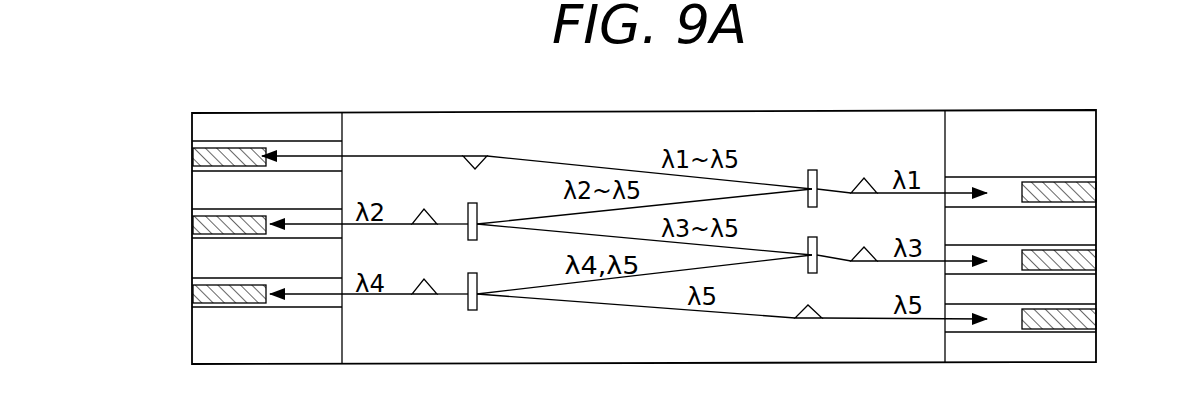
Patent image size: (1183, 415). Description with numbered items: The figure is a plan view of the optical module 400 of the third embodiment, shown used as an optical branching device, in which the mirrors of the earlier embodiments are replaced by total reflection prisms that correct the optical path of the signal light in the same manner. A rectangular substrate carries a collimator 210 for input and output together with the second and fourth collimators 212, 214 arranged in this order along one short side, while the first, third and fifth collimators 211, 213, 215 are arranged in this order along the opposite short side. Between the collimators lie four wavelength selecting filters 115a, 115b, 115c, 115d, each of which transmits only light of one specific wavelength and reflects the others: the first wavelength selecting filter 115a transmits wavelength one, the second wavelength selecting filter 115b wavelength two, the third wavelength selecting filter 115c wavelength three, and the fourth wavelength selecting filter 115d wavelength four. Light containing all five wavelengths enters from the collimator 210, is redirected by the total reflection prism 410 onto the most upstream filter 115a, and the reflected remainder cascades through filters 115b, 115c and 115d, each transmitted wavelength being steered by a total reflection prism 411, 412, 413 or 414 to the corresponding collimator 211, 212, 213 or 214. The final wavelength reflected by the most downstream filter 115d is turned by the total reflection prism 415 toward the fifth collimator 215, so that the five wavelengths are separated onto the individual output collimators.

The optical module 400 is at (876, 98).
The collimator for input and output 210 is at (212, 145).
The second collimator 212 is at (212, 214).
The fourth collimator 214 is at (212, 283).
The first collimator 211 is at (1078, 181).
The third collimator 213 is at (1078, 250).
The fifth collimator 215 is at (1078, 309).
The total reflection prism 410 is at (466, 164).
The total reflection prism 411 is at (866, 180).
The total reflection prism 412 is at (424, 226).
The total reflection prism 413 is at (866, 248).
The total reflection prism 414 is at (424, 296).
The total reflection prism 415 is at (803, 311).
The first wavelength selecting filter 115a is at (812, 172).
The second wavelength selecting filter 115b is at (473, 230).
The third wavelength selecting filter 115c is at (815, 265).
The fourth wavelength selecting filter 115d is at (473, 298).